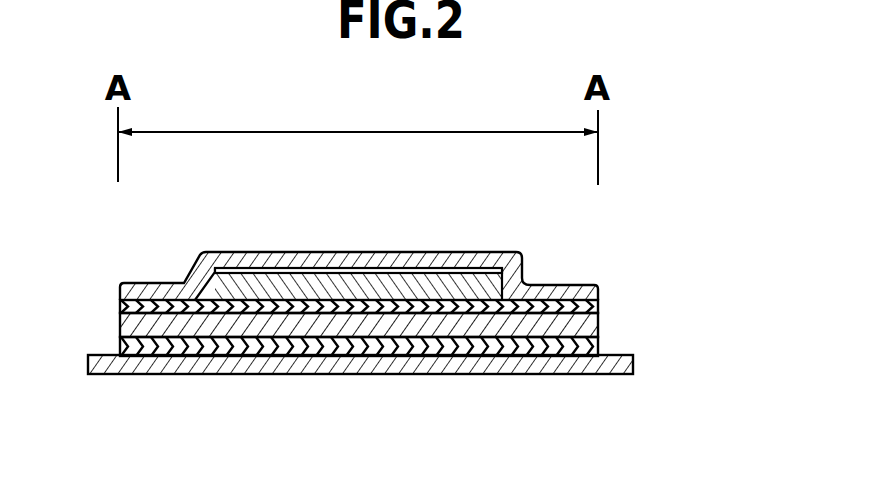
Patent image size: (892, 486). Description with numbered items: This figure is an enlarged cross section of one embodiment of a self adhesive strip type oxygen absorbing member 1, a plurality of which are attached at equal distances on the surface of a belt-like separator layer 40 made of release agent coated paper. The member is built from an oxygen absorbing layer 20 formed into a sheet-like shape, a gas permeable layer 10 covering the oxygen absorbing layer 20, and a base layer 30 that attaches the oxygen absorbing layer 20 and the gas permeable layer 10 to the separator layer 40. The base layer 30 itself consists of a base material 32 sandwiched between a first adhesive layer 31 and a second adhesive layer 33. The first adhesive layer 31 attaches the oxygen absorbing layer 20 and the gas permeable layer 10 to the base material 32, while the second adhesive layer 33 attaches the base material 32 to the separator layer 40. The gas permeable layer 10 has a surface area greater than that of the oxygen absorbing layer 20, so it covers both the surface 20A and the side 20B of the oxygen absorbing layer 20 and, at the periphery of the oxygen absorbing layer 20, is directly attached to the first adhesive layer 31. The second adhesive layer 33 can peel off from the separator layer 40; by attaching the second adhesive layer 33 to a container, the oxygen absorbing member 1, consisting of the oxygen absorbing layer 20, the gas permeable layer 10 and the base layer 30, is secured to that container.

The self adhesive strip type oxygen absorbing member 1 is at (346, 244).
The gas permeable layer 10 is at (410, 253).
The oxygen absorbing layer 20 is at (357, 236).
The surface of the oxygen absorbing layer 20A is at (259, 254).
The side of the oxygen absorbing layer 20B is at (195, 267).
The base layer 30 is at (441, 305).
The first adhesive layer 31 is at (600, 307).
The base material 32 is at (601, 328).
The second adhesive layer 33 is at (410, 348).
The separator layer 40 is at (635, 368).